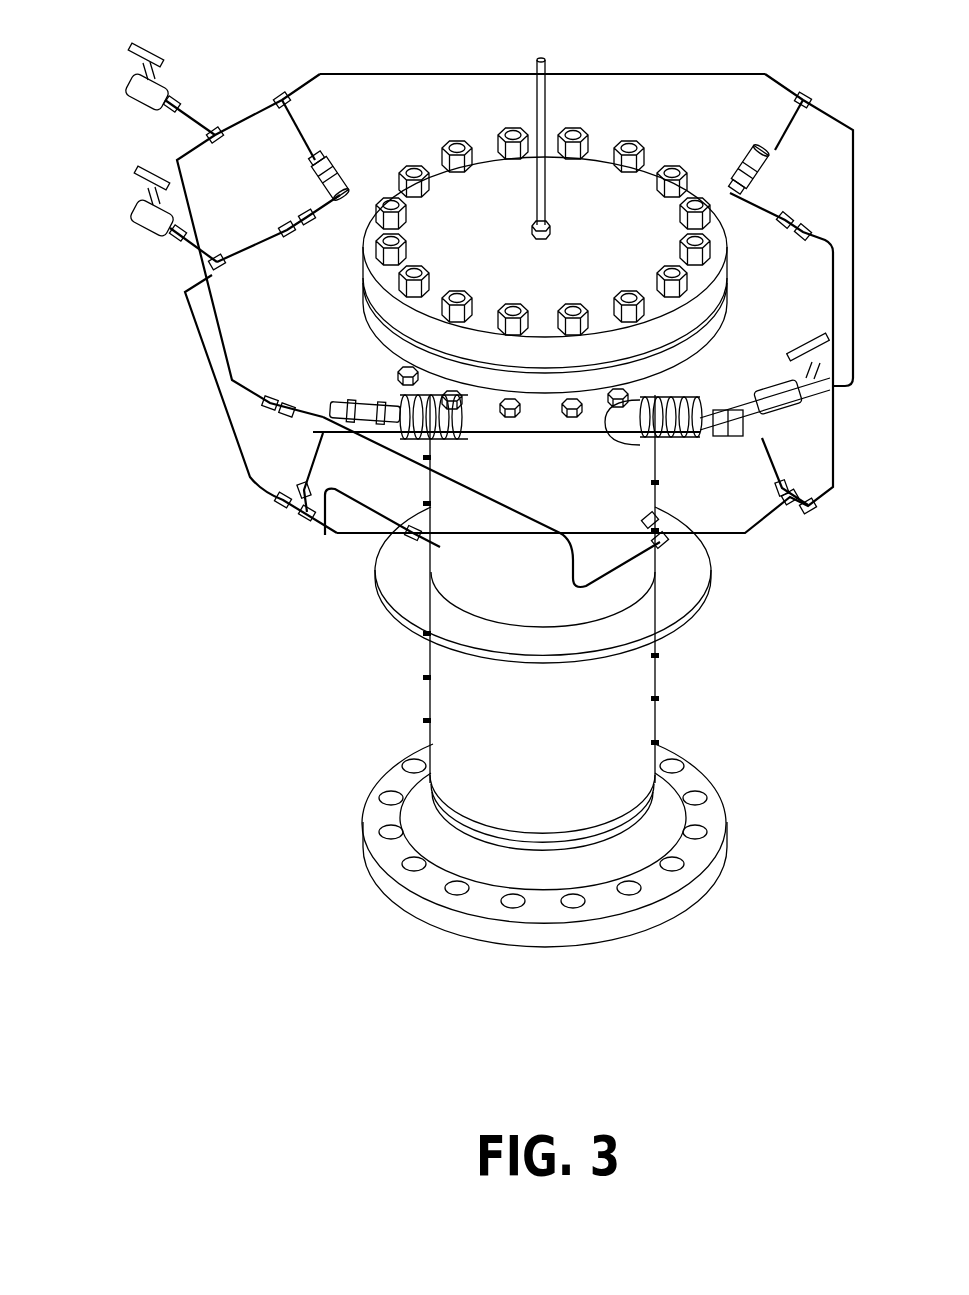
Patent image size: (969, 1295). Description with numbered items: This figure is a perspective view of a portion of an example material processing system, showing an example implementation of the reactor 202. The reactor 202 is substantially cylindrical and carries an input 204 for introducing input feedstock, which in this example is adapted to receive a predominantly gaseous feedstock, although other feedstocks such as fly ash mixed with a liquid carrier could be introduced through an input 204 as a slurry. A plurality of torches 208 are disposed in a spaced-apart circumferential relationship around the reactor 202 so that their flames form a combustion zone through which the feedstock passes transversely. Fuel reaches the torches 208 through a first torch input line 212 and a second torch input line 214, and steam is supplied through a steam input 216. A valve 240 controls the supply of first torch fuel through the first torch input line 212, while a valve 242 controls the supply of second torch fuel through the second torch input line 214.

The reactor 202 is at (657, 463).
The input 204 is at (548, 93).
The torches 208 is at (347, 170).
The first torch input line 212 is at (683, 74).
The second torch input line 214 is at (222, 416).
The steam input 216 is at (620, 577).
The valve 240 is at (160, 83).
The valve 242 is at (143, 227).